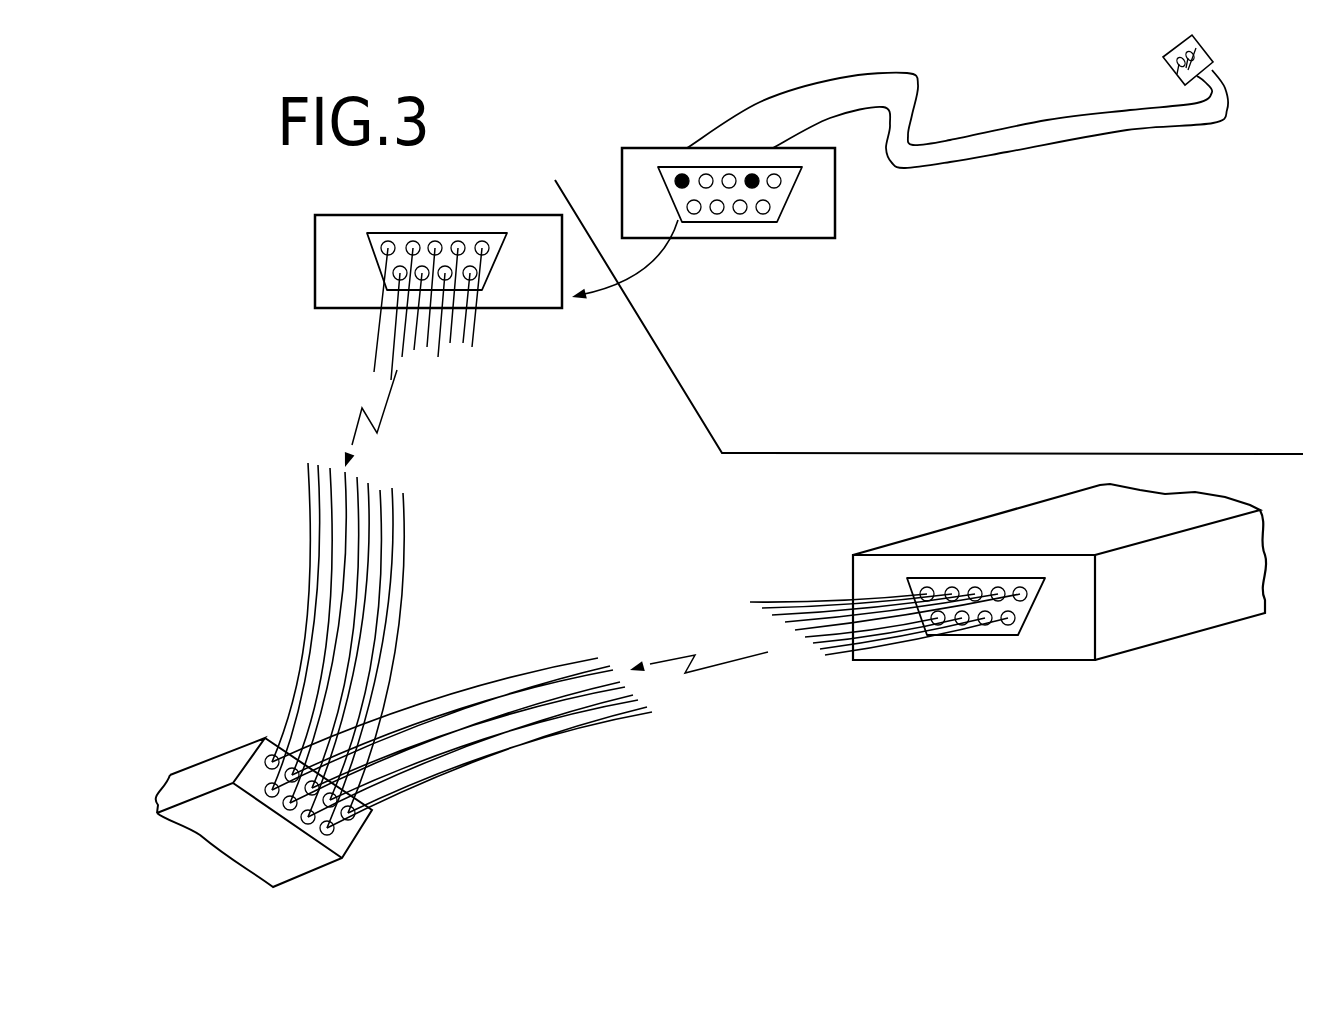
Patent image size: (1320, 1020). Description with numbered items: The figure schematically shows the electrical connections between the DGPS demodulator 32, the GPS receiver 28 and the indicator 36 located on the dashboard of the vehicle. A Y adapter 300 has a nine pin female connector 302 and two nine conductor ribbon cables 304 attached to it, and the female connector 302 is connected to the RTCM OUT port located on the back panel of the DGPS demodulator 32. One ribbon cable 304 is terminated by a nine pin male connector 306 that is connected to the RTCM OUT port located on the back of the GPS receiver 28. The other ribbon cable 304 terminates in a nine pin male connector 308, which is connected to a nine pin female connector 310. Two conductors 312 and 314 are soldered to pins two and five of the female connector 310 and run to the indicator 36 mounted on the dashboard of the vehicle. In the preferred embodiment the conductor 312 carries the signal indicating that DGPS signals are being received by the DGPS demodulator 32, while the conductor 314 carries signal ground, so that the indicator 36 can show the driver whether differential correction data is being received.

The GPS receiver 28 is at (998, 579).
The DGPS demodulator 32 is at (304, 795).
The indicator 36 is at (1228, 48).
The Y adapter 300 is at (288, 660).
The 9 pin female connector 302 is at (368, 847).
The 9 conductor ribbon cable 304 is at (430, 645).
The 9 pin male connector 306 is at (838, 586).
The 9 pin male connector 308 is at (290, 265).
The 9 pin female connector 310 is at (612, 201).
The conductor 312 is at (957, 134).
The conductor 314 is at (880, 116).